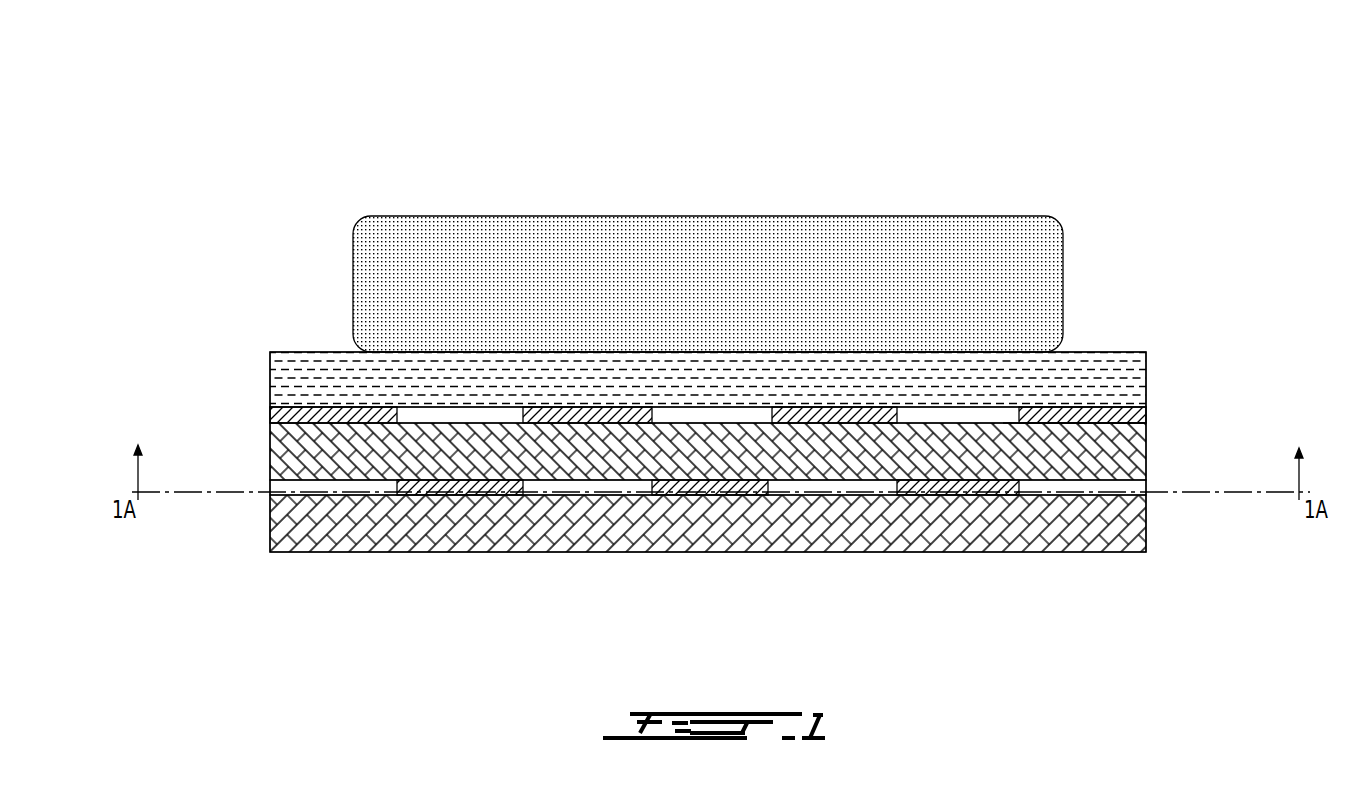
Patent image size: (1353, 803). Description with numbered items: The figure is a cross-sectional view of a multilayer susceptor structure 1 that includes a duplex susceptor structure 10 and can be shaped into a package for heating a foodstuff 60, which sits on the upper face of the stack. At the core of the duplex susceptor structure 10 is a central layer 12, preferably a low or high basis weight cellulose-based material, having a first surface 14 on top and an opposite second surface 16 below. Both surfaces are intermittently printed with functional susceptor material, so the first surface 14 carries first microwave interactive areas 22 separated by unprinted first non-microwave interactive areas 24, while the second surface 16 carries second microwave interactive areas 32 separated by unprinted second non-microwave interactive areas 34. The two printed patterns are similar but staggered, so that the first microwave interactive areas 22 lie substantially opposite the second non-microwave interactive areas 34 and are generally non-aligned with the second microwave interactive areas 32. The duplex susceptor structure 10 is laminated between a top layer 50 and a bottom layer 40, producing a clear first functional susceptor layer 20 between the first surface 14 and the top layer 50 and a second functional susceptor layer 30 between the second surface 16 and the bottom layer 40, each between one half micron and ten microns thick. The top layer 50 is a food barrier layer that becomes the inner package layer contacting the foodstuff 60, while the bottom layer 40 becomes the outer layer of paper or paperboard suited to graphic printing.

The multilayer susceptor structure 1 is at (1158, 127).
The duplex susceptor structure 10 is at (682, 398).
The central layer 12 is at (270, 463).
The first surface 14 is at (1003, 433).
The second surface 16 is at (797, 480).
The first functional susceptor layer 20 is at (759, 294).
The first microwave interactive areas 22 is at (330, 408).
The first non-microwave interactive areas 24 is at (467, 415).
The second functional susceptor layer 30 is at (764, 555).
The second microwave interactive areas 32 is at (462, 482).
The second non-microwave interactive areas 34 is at (322, 485).
The bottom layer 40 is at (1147, 542).
The top layer 50 is at (1118, 352).
The foodstuff 60 is at (1057, 223).